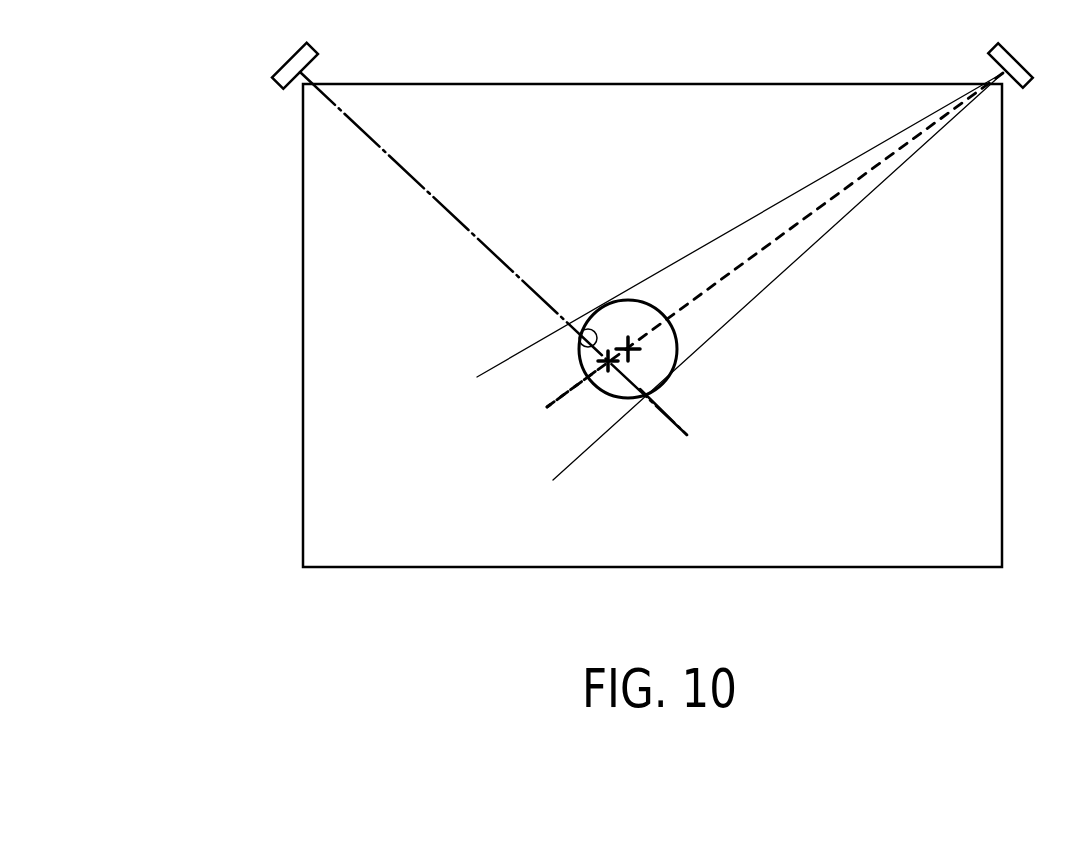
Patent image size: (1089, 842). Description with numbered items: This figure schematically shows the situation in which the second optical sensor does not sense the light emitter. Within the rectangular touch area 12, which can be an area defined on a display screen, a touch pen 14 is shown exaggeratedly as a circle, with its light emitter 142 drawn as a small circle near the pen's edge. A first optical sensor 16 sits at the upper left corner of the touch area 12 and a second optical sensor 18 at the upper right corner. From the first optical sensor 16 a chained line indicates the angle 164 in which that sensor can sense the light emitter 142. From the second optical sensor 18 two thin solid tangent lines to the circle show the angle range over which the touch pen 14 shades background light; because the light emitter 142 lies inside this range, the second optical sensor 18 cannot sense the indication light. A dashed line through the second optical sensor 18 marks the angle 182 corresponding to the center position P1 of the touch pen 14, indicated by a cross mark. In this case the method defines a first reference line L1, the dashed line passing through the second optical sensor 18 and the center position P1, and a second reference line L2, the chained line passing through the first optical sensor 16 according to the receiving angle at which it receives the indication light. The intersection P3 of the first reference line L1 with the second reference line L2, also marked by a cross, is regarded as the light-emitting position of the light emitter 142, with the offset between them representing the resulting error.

The touch area 12 is at (998, 325).
The touch pen 14 is at (673, 337).
The light emitter 142 is at (597, 326).
The first optical sensor 16 is at (282, 72).
The angle 164 is at (473, 84).
The second optical sensor 18 is at (1027, 63).
The angle 182 is at (910, 140).
The first reference line L1 is at (545, 404).
The second reference line L2 is at (673, 420).
The center position P1 is at (629, 353).
The intersection P3 is at (607, 364).